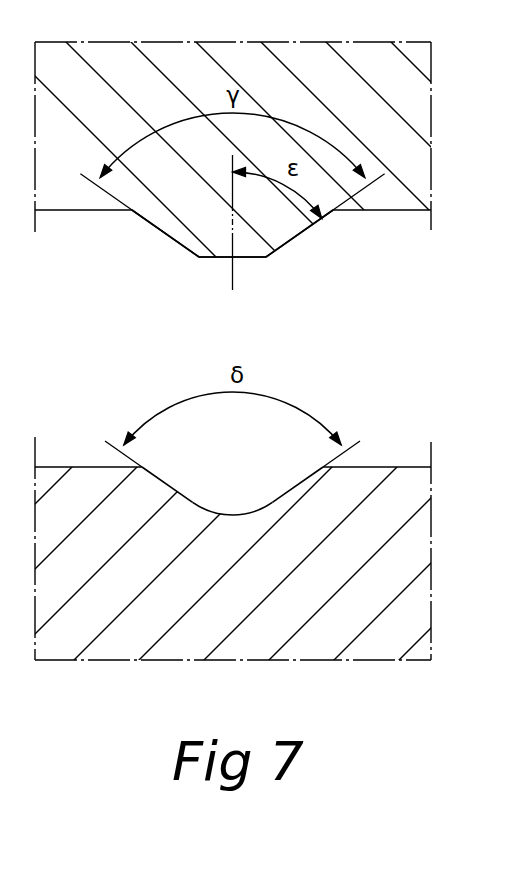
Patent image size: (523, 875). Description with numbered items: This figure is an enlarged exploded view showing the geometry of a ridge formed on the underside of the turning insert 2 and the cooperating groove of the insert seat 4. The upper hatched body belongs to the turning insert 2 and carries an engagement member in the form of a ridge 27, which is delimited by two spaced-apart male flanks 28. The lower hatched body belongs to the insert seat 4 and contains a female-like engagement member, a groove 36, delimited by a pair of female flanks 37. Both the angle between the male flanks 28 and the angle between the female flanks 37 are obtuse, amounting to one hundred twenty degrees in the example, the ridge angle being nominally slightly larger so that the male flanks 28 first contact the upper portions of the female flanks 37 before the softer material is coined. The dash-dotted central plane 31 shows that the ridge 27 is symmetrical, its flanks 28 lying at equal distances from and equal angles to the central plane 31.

The turning insert 2 is at (420, 127).
The insert seat 4 is at (397, 470).
The engagement member (ridge) 27 is at (202, 268).
The male flank 28 is at (152, 224).
The central plane 31 is at (233, 272).
The engagement member (groove) 36 is at (235, 445).
The female flank 37 is at (182, 488).